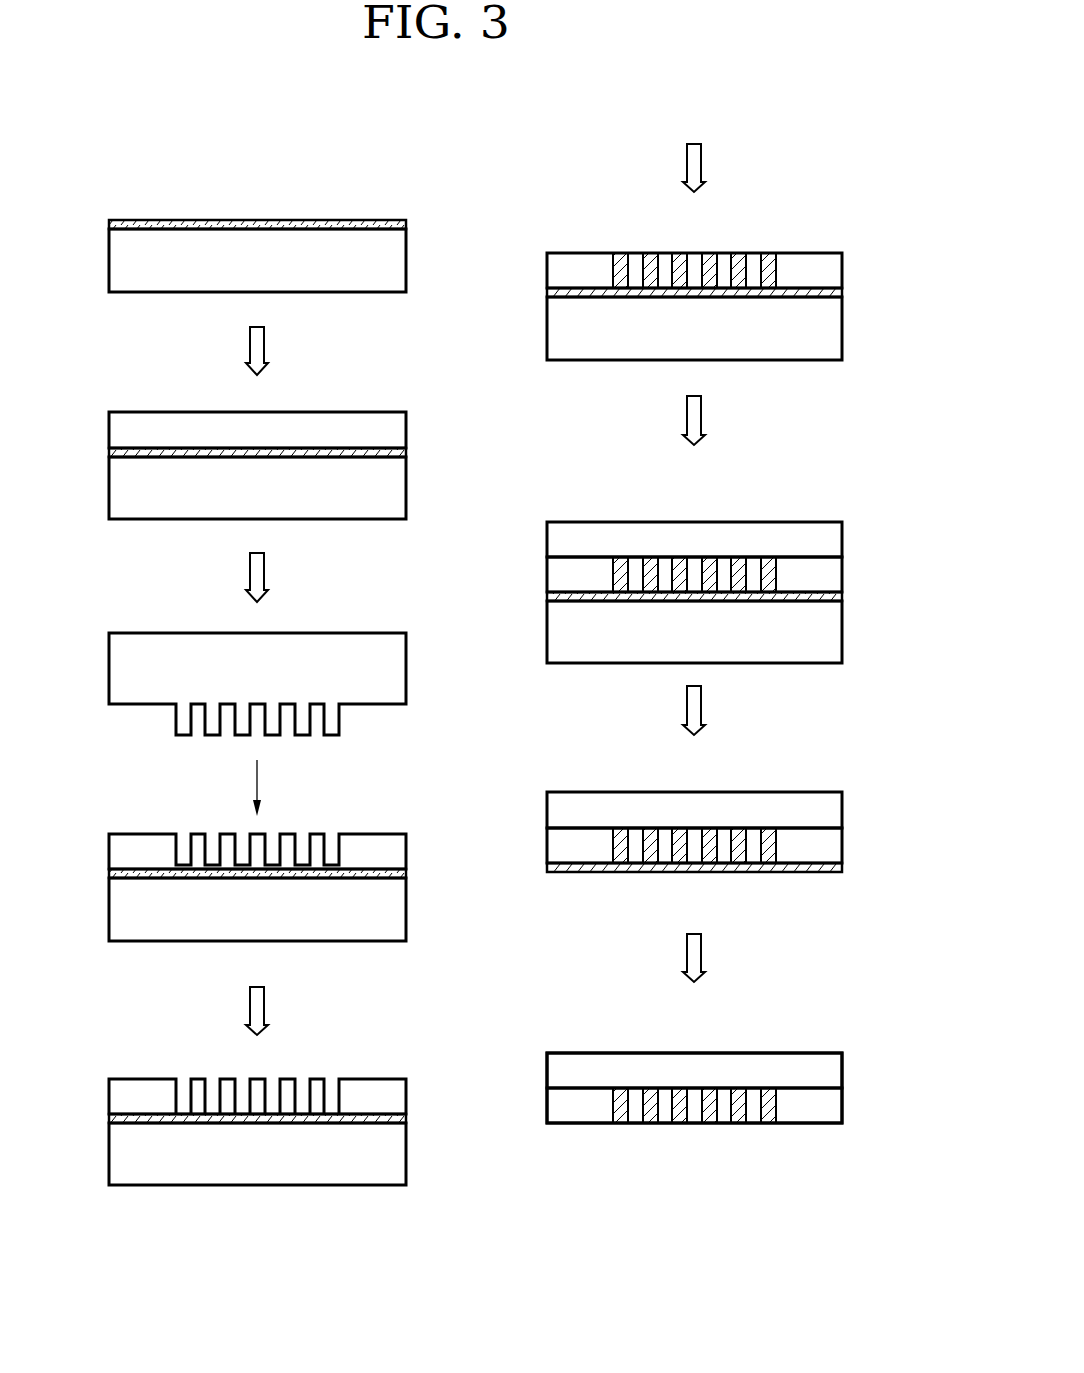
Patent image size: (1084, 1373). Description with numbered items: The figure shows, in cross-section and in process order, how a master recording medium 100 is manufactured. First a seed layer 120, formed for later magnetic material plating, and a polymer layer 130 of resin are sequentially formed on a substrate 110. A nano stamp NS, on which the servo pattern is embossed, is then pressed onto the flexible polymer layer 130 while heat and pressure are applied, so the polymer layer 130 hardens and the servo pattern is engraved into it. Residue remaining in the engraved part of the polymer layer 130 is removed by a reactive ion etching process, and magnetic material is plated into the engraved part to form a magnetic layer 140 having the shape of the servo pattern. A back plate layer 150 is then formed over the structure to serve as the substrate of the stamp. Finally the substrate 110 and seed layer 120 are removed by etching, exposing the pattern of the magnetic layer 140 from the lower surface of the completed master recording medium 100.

The master recording medium 100 is at (580, 1166).
The substrate 110 is at (110, 259).
The seed layer 120 is at (110, 225).
The polymer layer 130 is at (110, 425).
The magnetic layer 140 is at (770, 254).
The back plate layer 150 is at (843, 537).
The nano stamp NS is at (110, 672).